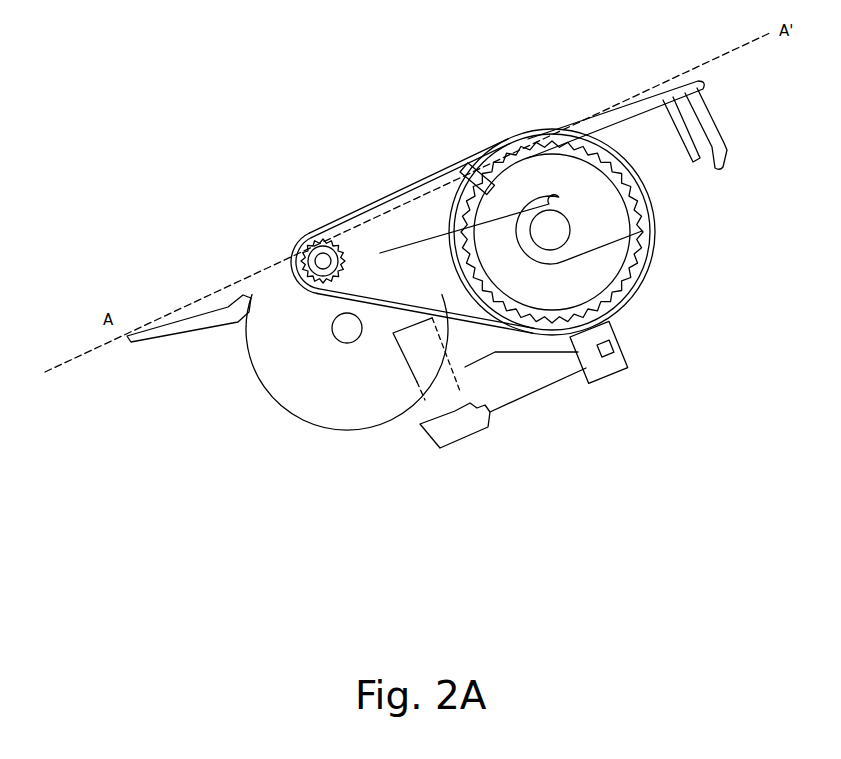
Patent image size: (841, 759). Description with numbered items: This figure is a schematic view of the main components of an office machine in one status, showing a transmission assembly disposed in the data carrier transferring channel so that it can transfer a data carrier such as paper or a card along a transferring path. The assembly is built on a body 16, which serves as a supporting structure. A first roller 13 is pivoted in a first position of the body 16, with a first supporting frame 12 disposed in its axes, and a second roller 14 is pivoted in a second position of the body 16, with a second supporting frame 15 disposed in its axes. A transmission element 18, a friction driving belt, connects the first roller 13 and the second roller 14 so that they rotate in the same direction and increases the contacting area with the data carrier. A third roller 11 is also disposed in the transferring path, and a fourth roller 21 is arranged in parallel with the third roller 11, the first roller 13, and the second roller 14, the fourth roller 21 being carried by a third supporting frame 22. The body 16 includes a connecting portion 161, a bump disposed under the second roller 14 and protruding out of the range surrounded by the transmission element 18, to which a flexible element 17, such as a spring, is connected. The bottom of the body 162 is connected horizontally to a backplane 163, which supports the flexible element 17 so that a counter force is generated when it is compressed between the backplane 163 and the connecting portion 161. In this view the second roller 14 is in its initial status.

The third roller 11 is at (531, 133).
The first supporting frame 12 is at (572, 217).
The first roller 13 is at (652, 192).
The second roller 14 is at (345, 258).
The second supporting frame 15 is at (328, 264).
The body 16 is at (505, 282).
The connecting portion 161 is at (392, 354).
The bottom of the body 162 is at (628, 342).
The backplane 163 is at (530, 390).
The flexible element 17 is at (425, 397).
The transmission element 18 is at (407, 190).
The fourth roller 21 is at (267, 270).
The third supporting frame 22 is at (333, 337).